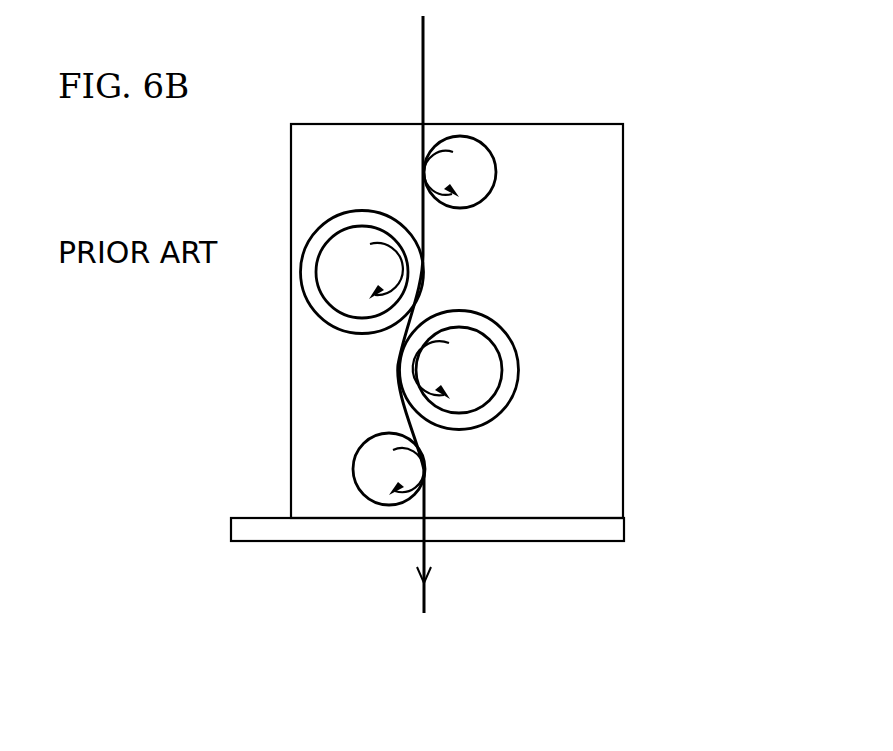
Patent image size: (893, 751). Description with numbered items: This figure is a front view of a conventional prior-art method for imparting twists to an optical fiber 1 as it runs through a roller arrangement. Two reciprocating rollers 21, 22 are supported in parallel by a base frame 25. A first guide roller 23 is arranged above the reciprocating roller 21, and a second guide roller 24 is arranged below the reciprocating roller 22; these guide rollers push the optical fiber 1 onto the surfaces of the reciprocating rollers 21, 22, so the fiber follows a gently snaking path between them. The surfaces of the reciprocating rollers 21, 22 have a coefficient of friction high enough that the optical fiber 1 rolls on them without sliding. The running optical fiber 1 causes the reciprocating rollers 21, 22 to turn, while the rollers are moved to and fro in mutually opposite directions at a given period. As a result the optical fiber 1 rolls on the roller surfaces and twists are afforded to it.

The optical fiber 1 is at (423, 103).
The reciprocating roller 21 is at (362, 218).
The reciprocating roller 22 is at (495, 318).
The first guide roller 23 is at (478, 172).
The second guide roller 24 is at (375, 457).
The base frame 25 is at (598, 455).